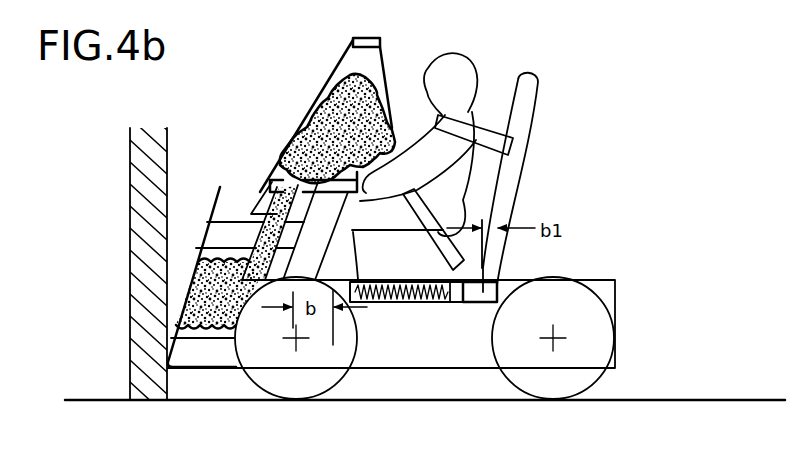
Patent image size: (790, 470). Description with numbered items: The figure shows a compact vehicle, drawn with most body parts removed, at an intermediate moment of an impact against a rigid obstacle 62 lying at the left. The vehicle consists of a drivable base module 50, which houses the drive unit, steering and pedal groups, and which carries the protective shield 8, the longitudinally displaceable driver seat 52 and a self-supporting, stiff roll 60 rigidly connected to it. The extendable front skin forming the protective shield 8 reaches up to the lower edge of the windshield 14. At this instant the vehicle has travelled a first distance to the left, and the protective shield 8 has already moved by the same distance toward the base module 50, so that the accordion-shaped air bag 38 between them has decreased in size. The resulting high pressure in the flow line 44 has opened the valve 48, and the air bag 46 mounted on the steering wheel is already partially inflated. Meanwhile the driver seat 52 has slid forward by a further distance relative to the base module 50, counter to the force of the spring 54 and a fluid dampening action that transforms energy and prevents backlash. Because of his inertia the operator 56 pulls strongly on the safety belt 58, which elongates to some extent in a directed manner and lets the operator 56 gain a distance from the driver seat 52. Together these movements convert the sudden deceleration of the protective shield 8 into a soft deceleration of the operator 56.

The protective shield 8 is at (207, 202).
The windshield 14 is at (331, 70).
The air bag 38 is at (211, 310).
The flow line 44 is at (260, 206).
The air bag 46 is at (326, 103).
The valve 48 is at (288, 146).
The base module 50 is at (460, 346).
The driver seat 52 is at (505, 173).
The spring 54 is at (397, 303).
The operator 56 is at (459, 63).
The safety belt 58 is at (500, 118).
The roll 60 is at (382, 43).
The obstacle 62 is at (148, 237).